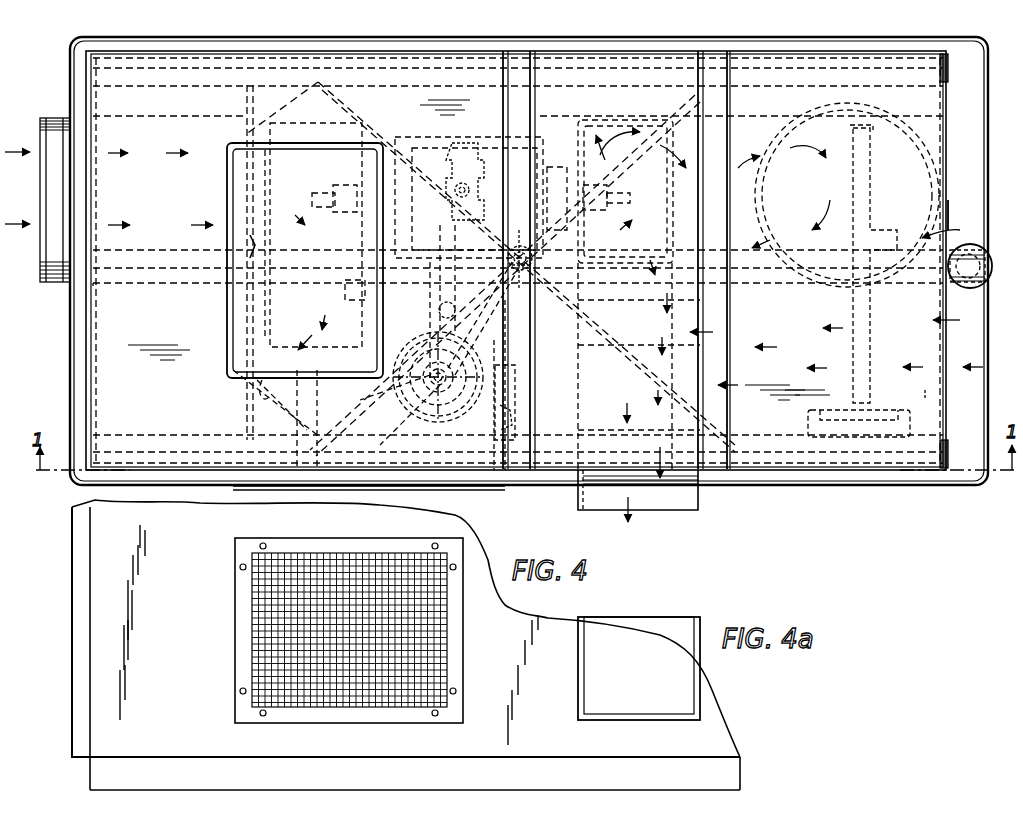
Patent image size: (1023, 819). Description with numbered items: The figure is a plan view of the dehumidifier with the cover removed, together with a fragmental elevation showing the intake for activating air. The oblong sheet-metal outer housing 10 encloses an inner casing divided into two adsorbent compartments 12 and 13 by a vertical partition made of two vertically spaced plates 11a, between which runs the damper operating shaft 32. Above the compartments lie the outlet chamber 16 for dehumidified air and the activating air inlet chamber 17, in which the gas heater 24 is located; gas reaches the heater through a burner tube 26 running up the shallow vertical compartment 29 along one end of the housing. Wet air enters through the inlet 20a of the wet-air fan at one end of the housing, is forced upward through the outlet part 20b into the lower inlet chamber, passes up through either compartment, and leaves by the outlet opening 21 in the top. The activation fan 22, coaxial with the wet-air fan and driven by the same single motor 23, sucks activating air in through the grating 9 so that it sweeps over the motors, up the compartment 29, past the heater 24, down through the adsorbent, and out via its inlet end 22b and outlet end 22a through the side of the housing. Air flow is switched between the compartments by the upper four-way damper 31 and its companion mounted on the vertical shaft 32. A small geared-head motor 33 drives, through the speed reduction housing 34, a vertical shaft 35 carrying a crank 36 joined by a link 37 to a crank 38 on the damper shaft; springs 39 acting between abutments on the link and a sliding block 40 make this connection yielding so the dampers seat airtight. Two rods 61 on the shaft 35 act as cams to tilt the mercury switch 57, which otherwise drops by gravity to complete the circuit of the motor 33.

In FIG. 4, the grating 9 is at (452, 489).
In FIG. 4a, the grating 9 is at (298, 688).
In FIG. 4, the outer housing 10 is at (808, 486).
In FIG. 4, the vertically spaced plates 11a is at (100, 283).
In FIG. 4, the compartment 12 is at (918, 115).
In FIG. 4, the compartment 13 is at (920, 342).
In FIG. 4, the outlet chamber 16 is at (262, 392).
In FIG. 4, the activating air inlet chamber 17 is at (925, 396).
In FIG. 4, the inlet 20a is at (65, 282).
In FIG. 4, the outlet part 20b is at (312, 285).
In FIG. 4, the outlet opening 21 is at (233, 302).
In FIG. 4, the activation fan 22 is at (615, 108).
In FIG. 4, the outlet end 22a is at (698, 510).
In FIG. 4a, the outlet end 22a is at (688, 720).
In FIG. 4, the inlet end 22b is at (878, 125).
In FIG. 4, the motor 23 is at (488, 152).
In FIG. 4, the heater 24 is at (858, 345).
In FIG. 4, the burner tube 26 is at (985, 255).
In FIG. 4, the shallow vertical compartment 29 is at (972, 210).
In FIG. 4, the upper damper 31 is at (612, 330).
In FIG. 4, the vertical shaft 32 is at (508, 270).
In FIG. 4, the geared-head motor 33 is at (285, 405).
In FIG. 4, the speed reduction housing 34 is at (470, 357).
In FIG. 4, the vertical shaft 35 is at (438, 390).
In FIG. 4, the crank 36 is at (438, 315).
In FIG. 4, the link 37 is at (447, 270).
In FIG. 4, the crank 38 is at (500, 248).
In FIG. 4, the springs 39 is at (452, 128).
In FIG. 4, the sliding block 40 is at (450, 205).
In FIG. 4, the mercury switch 57 is at (518, 418).
In FIG. 4, the rods 61 is at (500, 365).